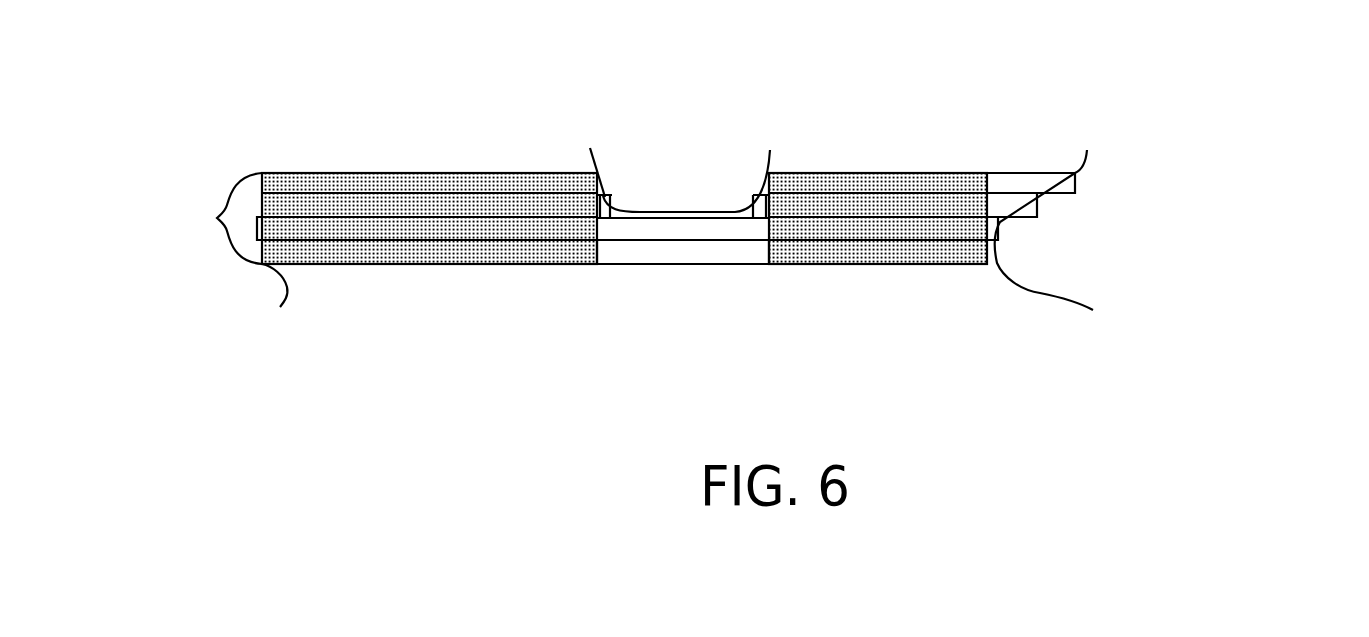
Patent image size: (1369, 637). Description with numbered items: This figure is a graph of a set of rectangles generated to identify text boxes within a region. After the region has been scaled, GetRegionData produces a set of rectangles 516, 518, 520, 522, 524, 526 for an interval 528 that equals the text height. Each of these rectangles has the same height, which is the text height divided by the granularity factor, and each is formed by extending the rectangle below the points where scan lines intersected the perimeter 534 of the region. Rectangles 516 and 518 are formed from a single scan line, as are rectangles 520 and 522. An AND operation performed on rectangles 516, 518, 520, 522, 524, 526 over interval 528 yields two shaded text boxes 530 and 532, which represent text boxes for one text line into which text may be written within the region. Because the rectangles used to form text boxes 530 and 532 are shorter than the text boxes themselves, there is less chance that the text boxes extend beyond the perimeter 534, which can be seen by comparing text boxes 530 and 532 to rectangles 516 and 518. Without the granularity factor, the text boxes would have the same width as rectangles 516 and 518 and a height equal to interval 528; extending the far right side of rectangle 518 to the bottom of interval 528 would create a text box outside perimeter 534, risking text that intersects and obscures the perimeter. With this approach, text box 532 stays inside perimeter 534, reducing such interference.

The rectangle 516 is at (393, 95).
The rectangle 518 is at (1015, 183).
The rectangle 520 is at (603, 196).
The rectangle 522 is at (1037, 218).
The rectangle 524 is at (704, 232).
The rectangle 526 is at (668, 252).
The interval 528 is at (152, 218).
The text box 530 is at (598, 253).
The text box 532 is at (765, 253).
The perimeter 534 is at (1040, 293).